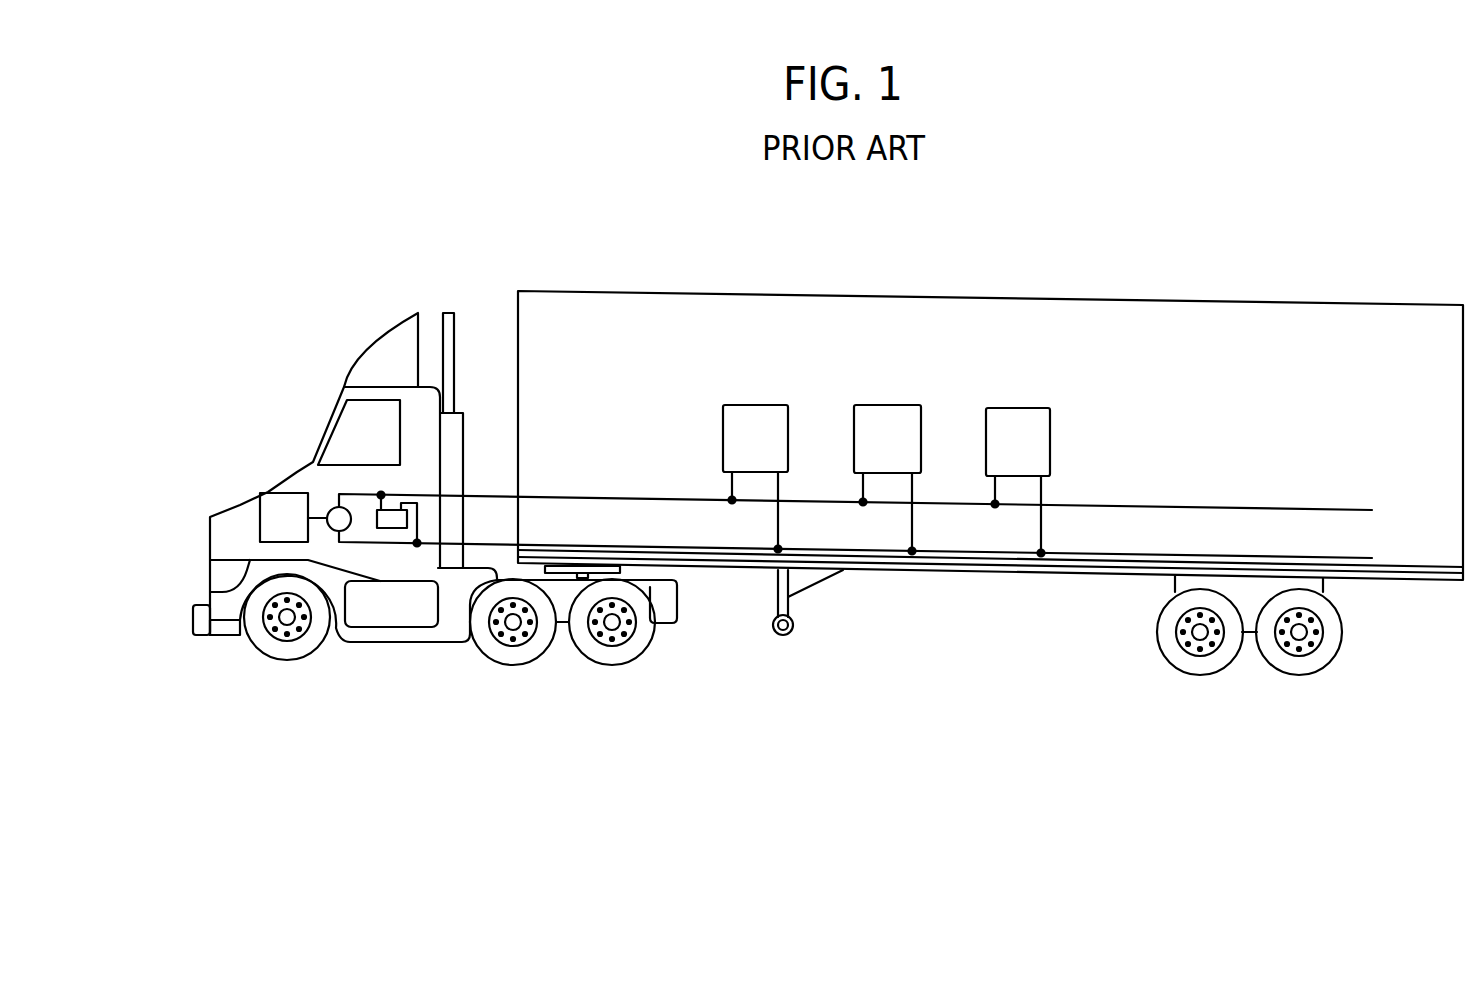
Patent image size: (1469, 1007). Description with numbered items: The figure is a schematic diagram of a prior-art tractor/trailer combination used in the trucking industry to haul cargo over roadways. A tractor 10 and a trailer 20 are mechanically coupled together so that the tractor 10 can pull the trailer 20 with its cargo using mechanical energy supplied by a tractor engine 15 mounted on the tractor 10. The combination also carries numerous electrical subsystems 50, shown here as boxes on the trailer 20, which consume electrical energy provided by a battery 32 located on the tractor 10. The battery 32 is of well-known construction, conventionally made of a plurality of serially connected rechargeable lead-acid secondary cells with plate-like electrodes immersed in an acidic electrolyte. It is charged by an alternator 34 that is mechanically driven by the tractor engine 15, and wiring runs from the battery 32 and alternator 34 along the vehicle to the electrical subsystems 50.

The tractor 10 is at (330, 410).
The tractor engine 15 is at (275, 503).
The trailer 20 is at (922, 293).
The battery 32 is at (398, 520).
The alternator 34 is at (331, 507).
The electrical subsystems 50 is at (793, 408).